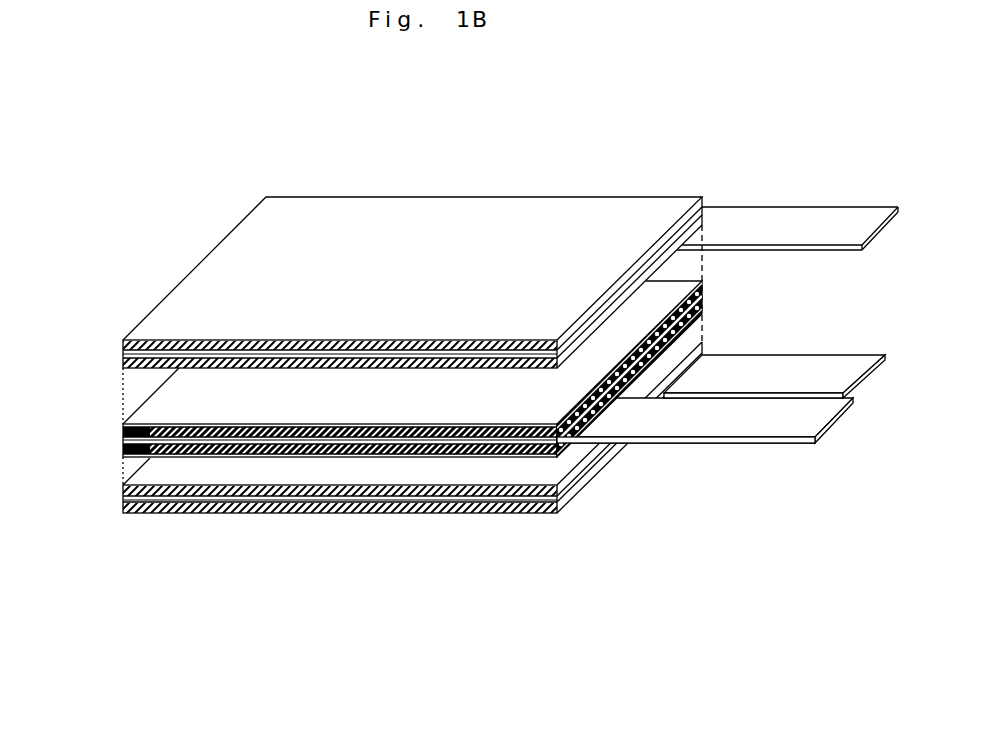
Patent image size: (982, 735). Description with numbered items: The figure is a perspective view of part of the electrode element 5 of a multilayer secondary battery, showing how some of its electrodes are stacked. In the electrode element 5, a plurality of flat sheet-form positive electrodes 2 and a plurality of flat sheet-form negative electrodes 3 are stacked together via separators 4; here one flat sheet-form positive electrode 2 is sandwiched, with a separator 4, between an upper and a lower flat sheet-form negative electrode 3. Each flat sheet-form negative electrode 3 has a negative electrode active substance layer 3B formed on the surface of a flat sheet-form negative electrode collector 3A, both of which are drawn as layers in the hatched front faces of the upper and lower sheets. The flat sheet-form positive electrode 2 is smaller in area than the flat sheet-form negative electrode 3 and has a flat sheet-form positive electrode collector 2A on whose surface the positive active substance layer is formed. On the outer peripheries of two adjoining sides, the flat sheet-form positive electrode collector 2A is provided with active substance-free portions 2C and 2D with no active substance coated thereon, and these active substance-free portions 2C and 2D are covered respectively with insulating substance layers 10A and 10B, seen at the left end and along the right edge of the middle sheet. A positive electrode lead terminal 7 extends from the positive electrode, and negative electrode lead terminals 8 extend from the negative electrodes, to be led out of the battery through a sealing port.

The electrode element 5 is at (114, 130).
The flat sheet-form negative electrode 3 is at (374, 363).
The flat sheet-form negative electrode collector 3A is at (187, 366).
The negative electrode active substance layer 3B is at (121, 359).
The flat sheet-form positive electrode 2 is at (424, 452).
The flat sheet-form positive electrode collector 2A is at (350, 440).
The active substance-free portion 2C is at (123, 455).
The active substance-free portion 2D is at (689, 364).
The separator 4 is at (427, 421).
The positive electrode lead terminal 7 is at (732, 425).
The negative electrode lead terminal 8 is at (778, 222).
The insulating substance layer 10A is at (123, 452).
The insulating substance layer 10B is at (701, 311).